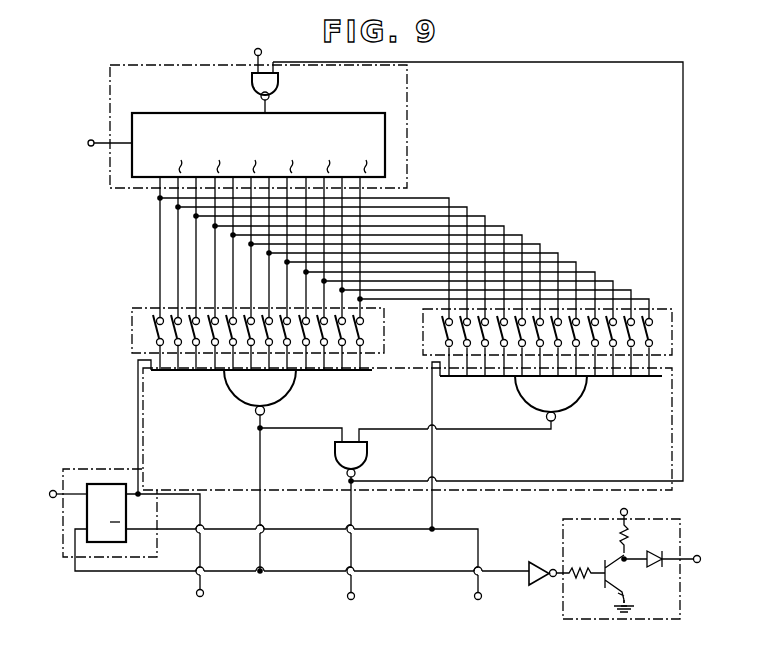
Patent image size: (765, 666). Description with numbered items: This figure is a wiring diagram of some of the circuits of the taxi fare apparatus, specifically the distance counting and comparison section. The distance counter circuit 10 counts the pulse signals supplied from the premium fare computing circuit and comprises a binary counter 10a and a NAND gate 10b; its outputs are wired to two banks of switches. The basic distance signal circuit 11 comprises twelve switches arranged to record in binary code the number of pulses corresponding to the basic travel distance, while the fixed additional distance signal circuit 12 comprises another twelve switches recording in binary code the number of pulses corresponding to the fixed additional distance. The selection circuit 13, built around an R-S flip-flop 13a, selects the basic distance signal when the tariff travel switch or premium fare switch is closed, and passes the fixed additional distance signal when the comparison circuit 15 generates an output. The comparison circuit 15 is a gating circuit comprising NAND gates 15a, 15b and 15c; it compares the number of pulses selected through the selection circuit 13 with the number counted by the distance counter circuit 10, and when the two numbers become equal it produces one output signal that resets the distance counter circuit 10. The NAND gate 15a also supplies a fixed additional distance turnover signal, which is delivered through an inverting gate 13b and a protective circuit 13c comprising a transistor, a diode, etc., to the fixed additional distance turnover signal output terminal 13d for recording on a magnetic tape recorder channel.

The distance counter circuit 10 is at (178, 64).
The binary counter 10a is at (356, 113).
The NAND gate 10b is at (278, 80).
The basic distance signal circuit 11 is at (138, 308).
The fixed additional distance signal circuit 12 is at (663, 309).
The selection circuit 13 is at (126, 468).
The R-S flip-flop 13a is at (90, 484).
The inverting gate 13b is at (530, 571).
The protective circuit 13c is at (680, 533).
The fixed additional distance turnover signal output terminal 13d is at (700, 566).
The comparison circuit 15 is at (483, 491).
The NAND gate 15a is at (294, 386).
The NAND gate 15b is at (586, 390).
The NAND gate 15c is at (367, 450).